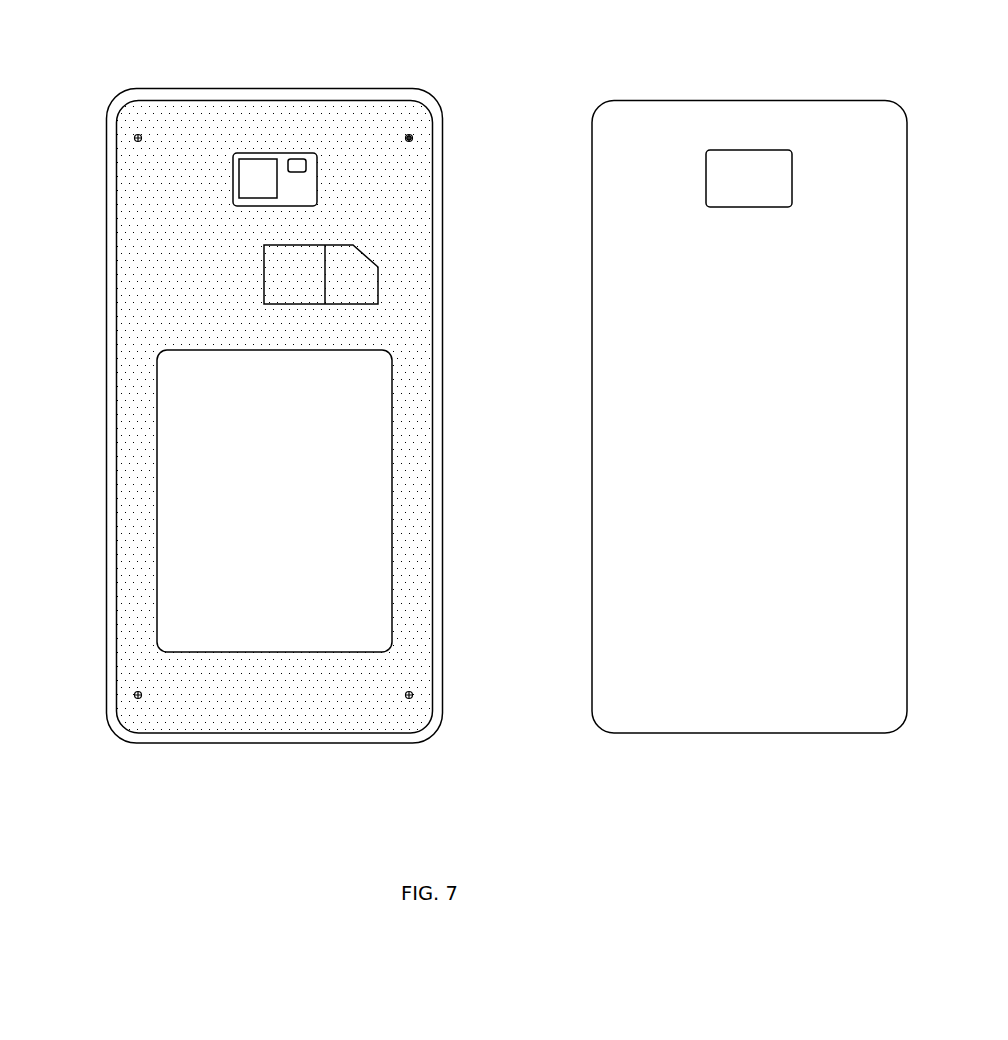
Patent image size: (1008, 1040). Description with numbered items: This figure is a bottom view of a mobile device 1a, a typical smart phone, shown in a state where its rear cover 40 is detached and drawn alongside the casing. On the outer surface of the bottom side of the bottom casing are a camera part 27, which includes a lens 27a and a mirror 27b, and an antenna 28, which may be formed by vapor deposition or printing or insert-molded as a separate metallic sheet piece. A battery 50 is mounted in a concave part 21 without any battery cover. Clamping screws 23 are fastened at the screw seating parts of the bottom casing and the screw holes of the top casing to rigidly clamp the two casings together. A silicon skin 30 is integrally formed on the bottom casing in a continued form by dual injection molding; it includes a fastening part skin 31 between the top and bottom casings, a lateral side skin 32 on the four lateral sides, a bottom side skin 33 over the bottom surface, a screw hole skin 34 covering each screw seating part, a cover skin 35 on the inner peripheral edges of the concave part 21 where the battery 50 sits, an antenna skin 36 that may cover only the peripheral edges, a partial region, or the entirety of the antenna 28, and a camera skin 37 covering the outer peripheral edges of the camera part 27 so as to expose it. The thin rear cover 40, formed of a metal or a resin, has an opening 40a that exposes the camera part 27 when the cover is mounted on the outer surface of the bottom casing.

The mobile device 1a is at (359, 80).
The concave part 21 is at (233, 653).
The clamping screws 23 is at (413, 134).
The camera part 27 is at (237, 166).
The lens 27a is at (255, 164).
The mirror 27b is at (295, 164).
The antenna 28 is at (358, 252).
The silicon skin 30 is at (101, 230).
The fastening part skin 31 is at (443, 583).
The lateral side skin 32 is at (433, 517).
The bottom side skin 33 is at (127, 505).
The screw hole skin 34 is at (414, 137).
The cover skin 35 is at (397, 452).
The antenna skin 36 is at (379, 303).
The camera skin 37 is at (318, 176).
The rear cover 40 is at (665, 703).
The opening 40a is at (764, 150).
The battery 50 is at (327, 625).